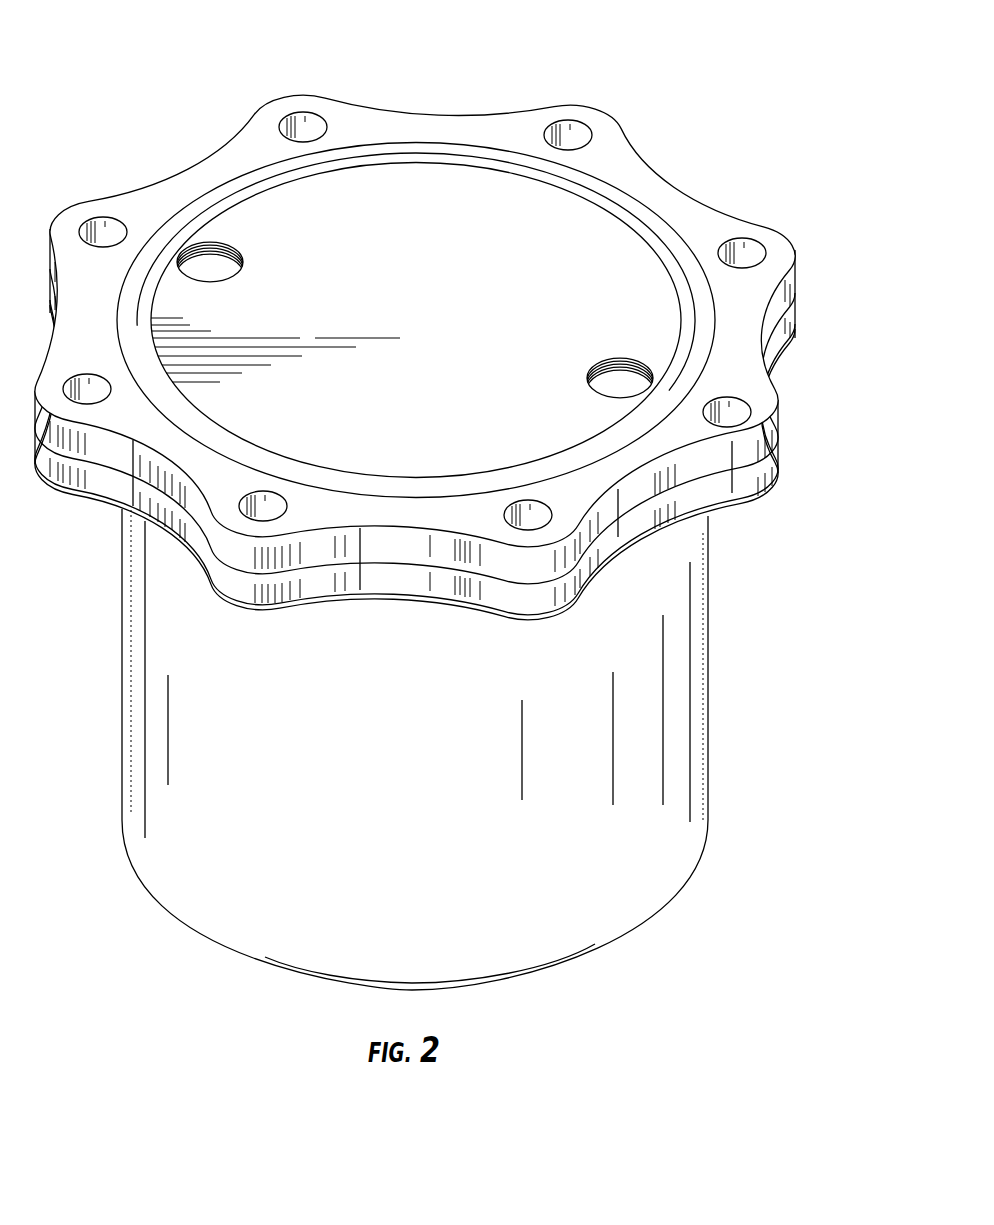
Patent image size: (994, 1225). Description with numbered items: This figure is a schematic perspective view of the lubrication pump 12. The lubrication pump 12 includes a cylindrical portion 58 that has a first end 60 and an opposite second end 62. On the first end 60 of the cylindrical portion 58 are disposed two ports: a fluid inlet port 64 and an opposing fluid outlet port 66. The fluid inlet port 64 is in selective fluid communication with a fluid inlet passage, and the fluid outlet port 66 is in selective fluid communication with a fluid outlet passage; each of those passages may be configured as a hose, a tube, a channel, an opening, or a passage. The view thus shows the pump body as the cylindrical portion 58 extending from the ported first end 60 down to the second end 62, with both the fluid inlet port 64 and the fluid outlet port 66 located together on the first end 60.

The lubrication pump 12 is at (573, 60).
The cylindrical portion 58 is at (680, 672).
The first end 60 is at (620, 243).
The second end 62 is at (547, 970).
The fluid inlet port 64 is at (637, 353).
The fluid outlet port 66 is at (213, 243).